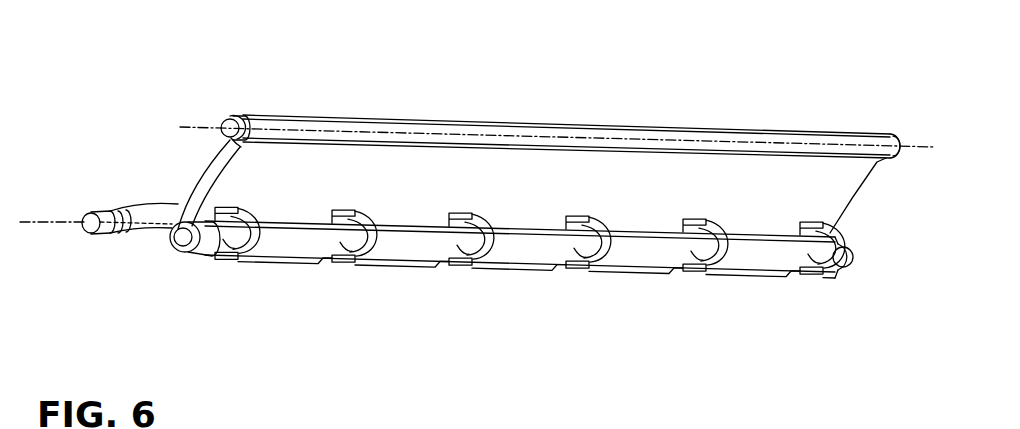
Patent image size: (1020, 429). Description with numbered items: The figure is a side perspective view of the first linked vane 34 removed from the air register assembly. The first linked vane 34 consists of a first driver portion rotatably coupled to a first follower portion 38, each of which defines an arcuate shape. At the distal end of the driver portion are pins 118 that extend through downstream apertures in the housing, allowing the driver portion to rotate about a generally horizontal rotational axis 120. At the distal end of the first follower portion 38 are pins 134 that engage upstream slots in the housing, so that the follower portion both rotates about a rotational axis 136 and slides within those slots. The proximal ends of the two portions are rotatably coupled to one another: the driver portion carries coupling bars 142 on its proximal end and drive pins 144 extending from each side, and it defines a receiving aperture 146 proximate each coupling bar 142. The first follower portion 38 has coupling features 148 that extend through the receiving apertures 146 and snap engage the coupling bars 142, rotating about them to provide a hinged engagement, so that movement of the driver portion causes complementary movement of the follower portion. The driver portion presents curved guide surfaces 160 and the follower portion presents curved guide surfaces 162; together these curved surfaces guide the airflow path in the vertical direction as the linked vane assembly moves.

The first linked vane 34 is at (688, 93).
The first follower portion 38 is at (145, 218).
The pins 118 is at (230, 117).
The rotational axis 120 is at (467, 133).
The pins 134 is at (97, 217).
The rotational axis 136 is at (50, 222).
The coupling bars 142 is at (462, 250).
The drive pins 144 is at (182, 240).
The receiving aperture 146 is at (470, 207).
The coupling features 148 is at (478, 242).
The curved guide surfaces 160 is at (195, 177).
The curved guide surfaces 162 is at (157, 202).